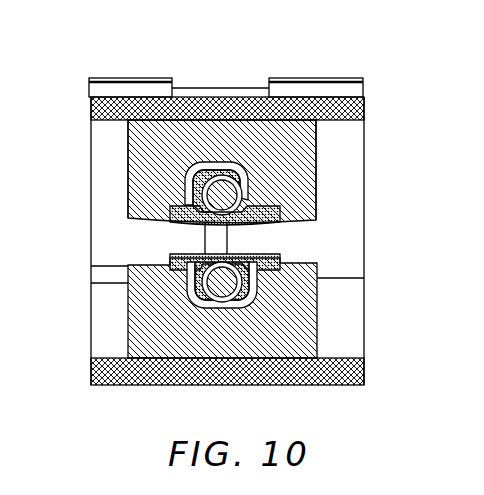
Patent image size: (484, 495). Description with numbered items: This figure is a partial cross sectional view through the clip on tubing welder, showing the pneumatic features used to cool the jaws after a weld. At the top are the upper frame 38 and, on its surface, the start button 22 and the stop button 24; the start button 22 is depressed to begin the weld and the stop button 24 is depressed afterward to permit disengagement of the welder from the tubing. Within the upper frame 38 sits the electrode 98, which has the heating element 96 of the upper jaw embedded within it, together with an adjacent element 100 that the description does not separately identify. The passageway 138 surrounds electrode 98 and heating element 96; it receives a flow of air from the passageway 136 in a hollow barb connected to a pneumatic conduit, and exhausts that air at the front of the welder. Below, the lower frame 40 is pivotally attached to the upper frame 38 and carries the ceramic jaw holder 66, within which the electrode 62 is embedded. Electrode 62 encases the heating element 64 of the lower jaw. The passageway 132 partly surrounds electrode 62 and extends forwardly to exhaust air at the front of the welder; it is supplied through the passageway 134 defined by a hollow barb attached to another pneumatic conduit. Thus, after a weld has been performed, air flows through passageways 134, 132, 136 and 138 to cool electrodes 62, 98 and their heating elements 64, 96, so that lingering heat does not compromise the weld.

The start button 22 is at (140, 78).
The stop button 24 is at (308, 78).
The upper frame 38 is at (225, 88).
The upper substrate 100 is at (316, 142).
The passageway 138 is at (253, 170).
The heating element 96 is at (243, 188).
The passageway 136 is at (258, 200).
The electrode 98 is at (253, 224).
The electrode 62 is at (205, 250).
The heating element 64 is at (168, 264).
The passageway 134 is at (264, 266).
The passageway 132 is at (300, 300).
The ceramic jaw holder 66 is at (295, 330).
The lower frame 40 is at (344, 385).